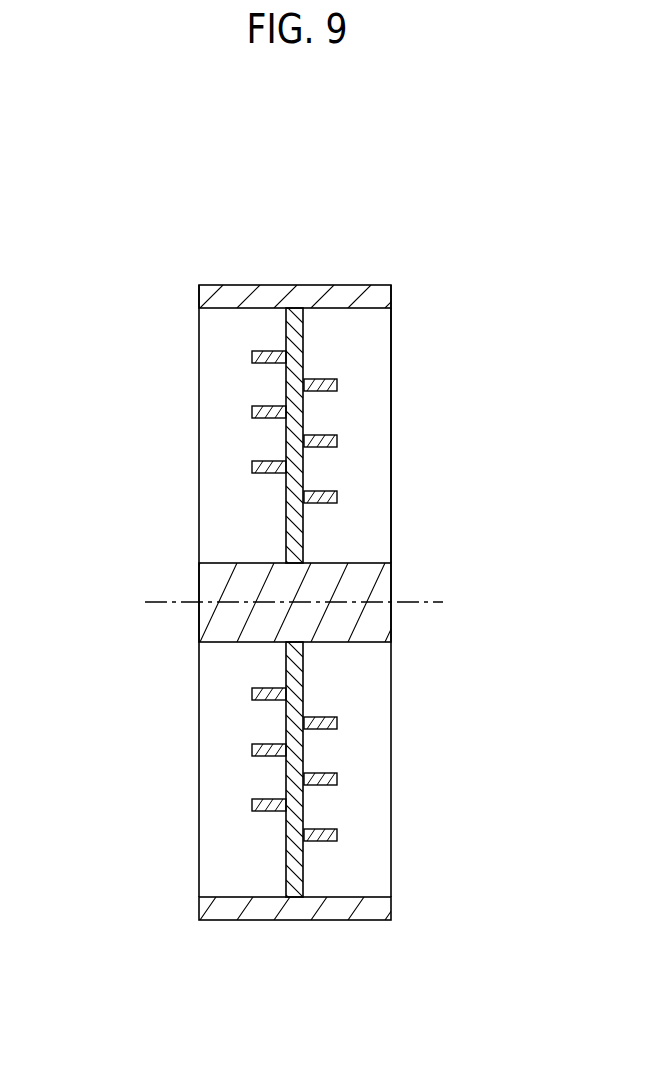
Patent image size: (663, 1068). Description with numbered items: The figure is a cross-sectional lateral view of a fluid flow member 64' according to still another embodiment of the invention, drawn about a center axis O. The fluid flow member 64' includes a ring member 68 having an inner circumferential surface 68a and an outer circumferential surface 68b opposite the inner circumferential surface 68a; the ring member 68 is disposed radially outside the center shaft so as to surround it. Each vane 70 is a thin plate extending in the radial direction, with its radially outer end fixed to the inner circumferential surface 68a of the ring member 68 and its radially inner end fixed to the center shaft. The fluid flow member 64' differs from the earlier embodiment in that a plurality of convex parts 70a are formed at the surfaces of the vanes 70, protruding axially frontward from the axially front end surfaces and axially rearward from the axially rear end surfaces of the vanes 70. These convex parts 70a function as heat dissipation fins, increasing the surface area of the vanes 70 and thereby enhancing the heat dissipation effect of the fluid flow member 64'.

The fluid flow member 64' is at (295, 524).
The ring member 68 is at (228, 285).
The inner circumferential surface 68a is at (355, 310).
The outer circumferential surface 68b is at (340, 285).
The vane 70 is at (303, 540).
The convex part 70a is at (252, 357).
The axis O is at (157, 600).